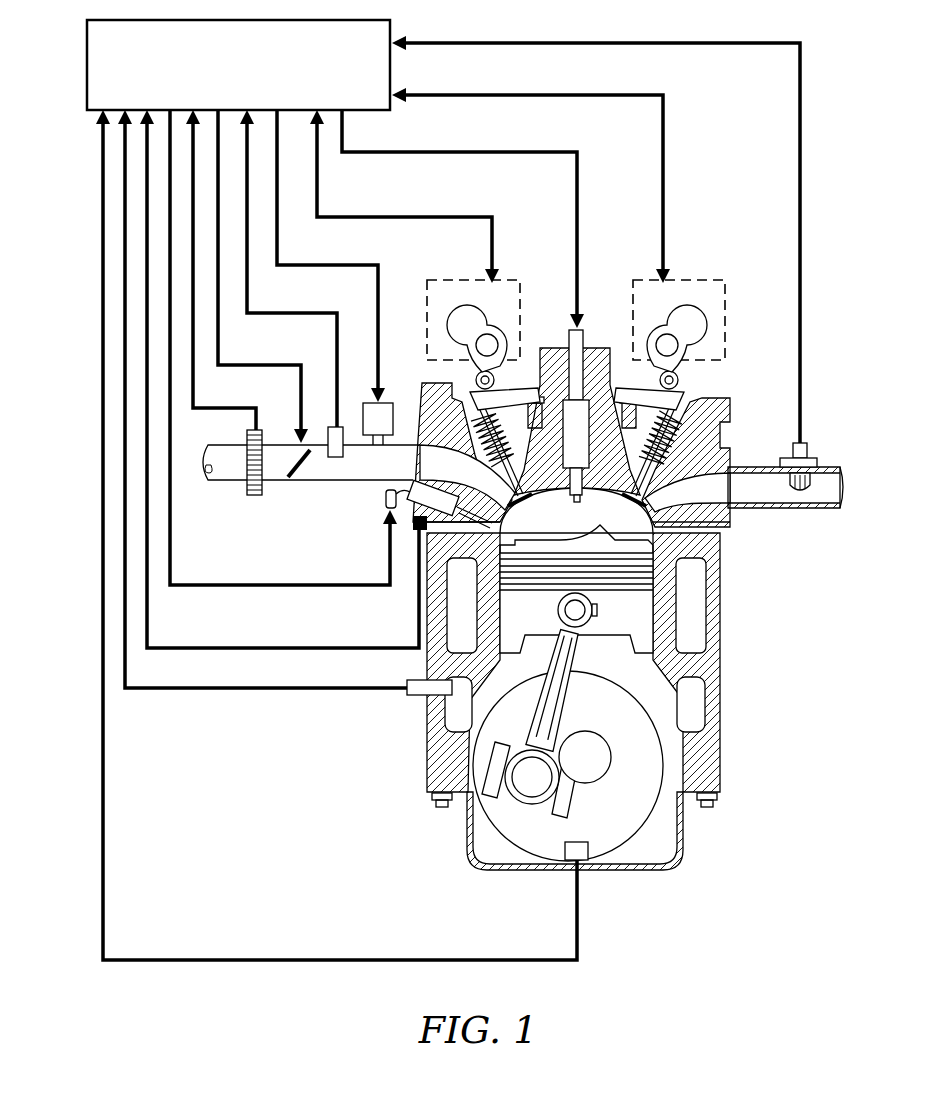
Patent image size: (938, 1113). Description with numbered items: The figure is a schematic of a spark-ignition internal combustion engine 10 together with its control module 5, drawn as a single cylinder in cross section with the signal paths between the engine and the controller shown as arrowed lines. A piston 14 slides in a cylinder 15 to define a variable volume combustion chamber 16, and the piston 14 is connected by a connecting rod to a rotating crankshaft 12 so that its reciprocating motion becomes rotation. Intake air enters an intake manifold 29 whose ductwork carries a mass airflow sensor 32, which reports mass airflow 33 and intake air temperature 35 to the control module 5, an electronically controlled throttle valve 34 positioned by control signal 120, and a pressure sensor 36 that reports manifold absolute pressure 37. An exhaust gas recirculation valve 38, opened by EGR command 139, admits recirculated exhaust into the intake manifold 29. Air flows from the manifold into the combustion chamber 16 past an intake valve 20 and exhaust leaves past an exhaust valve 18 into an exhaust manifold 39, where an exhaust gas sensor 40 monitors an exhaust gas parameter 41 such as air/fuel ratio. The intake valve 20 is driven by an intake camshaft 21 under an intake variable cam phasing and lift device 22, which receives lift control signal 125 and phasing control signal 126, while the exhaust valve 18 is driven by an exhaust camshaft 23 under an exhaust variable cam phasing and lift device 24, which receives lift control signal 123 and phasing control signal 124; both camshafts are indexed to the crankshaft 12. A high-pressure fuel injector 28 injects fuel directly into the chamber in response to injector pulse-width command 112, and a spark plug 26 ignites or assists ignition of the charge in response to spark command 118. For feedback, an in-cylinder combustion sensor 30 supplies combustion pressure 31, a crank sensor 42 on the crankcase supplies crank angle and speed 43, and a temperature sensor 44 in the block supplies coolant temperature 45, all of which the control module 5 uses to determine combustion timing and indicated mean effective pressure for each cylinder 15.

The control module 5 is at (230, 87).
The internal combustion engine 10 is at (608, 609).
The crankshaft 12 is at (630, 806).
The piston 14 is at (598, 626).
The cylinder 15 is at (662, 558).
The combustion chamber 16 is at (528, 542).
The exhaust valve 18 is at (652, 500).
The intake valve 20 is at (499, 492).
The intake camshaft 21 is at (492, 345).
The intake variable cam phasing/variable lift control device 22 is at (440, 317).
The exhaust camshaft 23 is at (672, 345).
The exhaust variable cam phasing/variable lift control device 24 is at (688, 317).
The spark plug 26 is at (582, 332).
The fuel injector 28 is at (388, 508).
The intake manifold 29 is at (407, 432).
The in-cylinder combustion sensor 30 is at (416, 532).
The in-cylinder combustion pressure 31 is at (233, 648).
The mass airflow sensor 32 is at (252, 497).
The mass airflow 33 is at (222, 270).
The throttle valve 34 is at (296, 480).
The intake air temperature 35 is at (202, 409).
The pressure sensor 36 is at (336, 458).
The manifold absolute pressure 37 is at (291, 314).
The exhaust gas recirculation valve 38 is at (371, 436).
The exhaust manifold 39 is at (750, 466).
The exhaust gas sensor 40 is at (808, 452).
The exhaust gas parameter 41 is at (758, 49).
The crank sensor 42 is at (563, 858).
The RPM 43 is at (283, 961).
The temperature sensor 44 is at (412, 695).
The coolant temperature 45 is at (293, 689).
The injector pulse-width command 112 is at (267, 583).
The spark command 118 is at (486, 152).
The throttle control signal 120 is at (246, 365).
The exhaust valve lift control signal 123 is at (531, 178).
The exhaust cam phasing control signal 124 is at (536, 95).
The intake valve lift control signal 125 is at (404, 196).
The intake cam phasing control signal 126 is at (376, 217).
The EGR command 139 is at (314, 264).